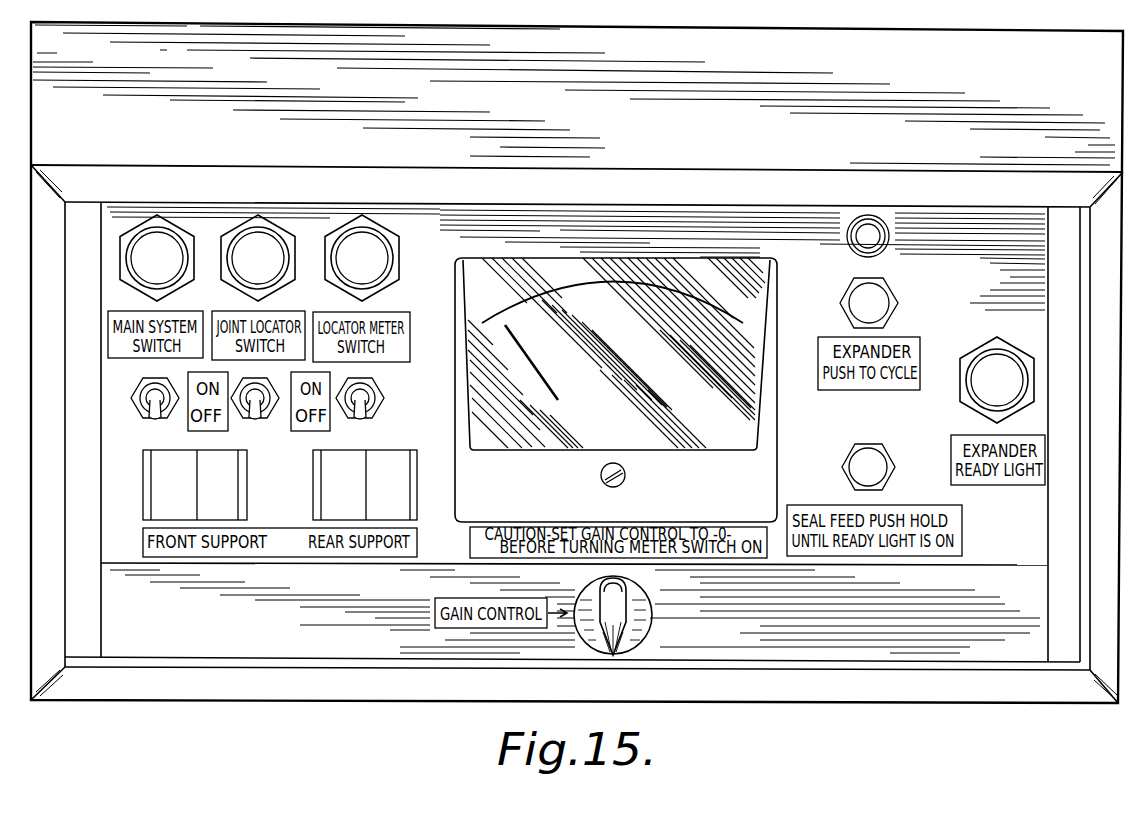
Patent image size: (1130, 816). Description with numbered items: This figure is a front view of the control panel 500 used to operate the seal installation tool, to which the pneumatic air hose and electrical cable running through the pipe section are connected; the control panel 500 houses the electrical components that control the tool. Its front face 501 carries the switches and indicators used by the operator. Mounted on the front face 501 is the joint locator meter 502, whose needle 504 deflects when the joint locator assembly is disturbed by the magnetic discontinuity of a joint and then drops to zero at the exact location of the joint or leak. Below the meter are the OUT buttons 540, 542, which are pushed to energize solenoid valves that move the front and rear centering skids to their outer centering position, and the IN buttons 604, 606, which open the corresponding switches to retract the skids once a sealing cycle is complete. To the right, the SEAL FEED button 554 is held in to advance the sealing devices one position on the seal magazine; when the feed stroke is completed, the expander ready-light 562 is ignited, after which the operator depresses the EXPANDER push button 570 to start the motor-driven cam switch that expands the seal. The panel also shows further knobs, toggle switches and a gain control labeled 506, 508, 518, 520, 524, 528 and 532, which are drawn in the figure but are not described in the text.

The control panel 500 is at (900, 708).
The front face 501 is at (205, 640).
The joint locator meter 502 is at (628, 258).
The needle 504 is at (525, 330).
The main system toggle switch 506 is at (149, 400).
The main system switch indicator knob 508 is at (160, 245).
The joint locator toggle switch 518 is at (260, 410).
The joint locator switch knob 520 is at (260, 245).
The locator meter toggle switch 524 is at (382, 402).
The locator meter switch knob 528 is at (365, 245).
The gain control knob 532 is at (628, 615).
The OUT push button 540 is at (222, 507).
The OUT button 542 is at (397, 497).
The SEAL FEED button 554 is at (868, 463).
The expander ready-light 562 is at (995, 380).
The EXPANDER push button 570 is at (878, 300).
The IN button 604 is at (333, 497).
The IN button 606 is at (162, 497).